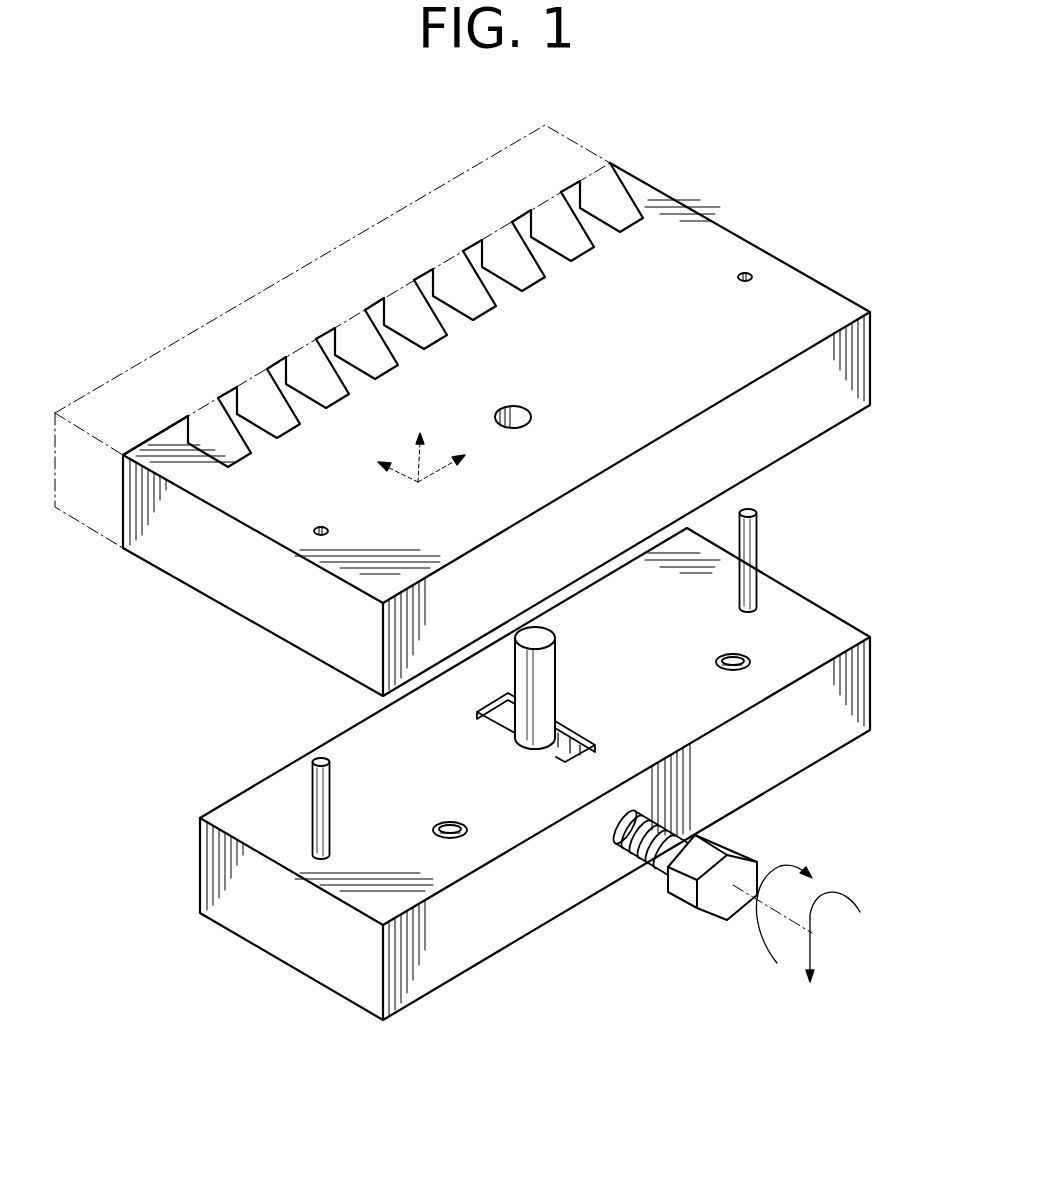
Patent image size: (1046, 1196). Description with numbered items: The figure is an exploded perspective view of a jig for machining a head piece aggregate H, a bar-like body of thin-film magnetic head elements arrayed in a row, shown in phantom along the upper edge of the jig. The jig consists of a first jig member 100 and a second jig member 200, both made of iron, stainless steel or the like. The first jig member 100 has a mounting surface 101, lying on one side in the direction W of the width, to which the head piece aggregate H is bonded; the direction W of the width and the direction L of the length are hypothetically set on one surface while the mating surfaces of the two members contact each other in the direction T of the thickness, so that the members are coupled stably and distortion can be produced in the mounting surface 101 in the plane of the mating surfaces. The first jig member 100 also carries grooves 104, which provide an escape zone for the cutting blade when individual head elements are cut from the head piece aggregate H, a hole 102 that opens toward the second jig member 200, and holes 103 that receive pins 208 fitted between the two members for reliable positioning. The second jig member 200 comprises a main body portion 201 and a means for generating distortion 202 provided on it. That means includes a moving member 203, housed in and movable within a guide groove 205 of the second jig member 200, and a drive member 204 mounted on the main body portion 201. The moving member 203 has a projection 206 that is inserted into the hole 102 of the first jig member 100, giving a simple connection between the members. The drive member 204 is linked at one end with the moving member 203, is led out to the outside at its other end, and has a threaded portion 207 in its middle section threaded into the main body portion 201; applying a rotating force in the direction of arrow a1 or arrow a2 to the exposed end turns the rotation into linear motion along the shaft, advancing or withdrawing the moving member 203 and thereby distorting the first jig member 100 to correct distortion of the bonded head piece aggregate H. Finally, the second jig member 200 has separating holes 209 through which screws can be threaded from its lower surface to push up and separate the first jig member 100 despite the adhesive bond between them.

The first jig member 100 is at (676, 184).
The mounting surface 101 is at (537, 207).
The hole 102 is at (518, 412).
The holes 103 is at (747, 272).
The grooves 104 is at (187, 440).
The second jig member 200 is at (248, 955).
The main body portion 201 is at (223, 872).
The means for generating distortion 202 is at (689, 877).
The moving member 203 is at (557, 732).
The drive member 204 is at (730, 862).
The guide groove 205 is at (585, 740).
The projection 206 is at (547, 655).
The threaded portion 207 is at (627, 853).
The pins 208 is at (316, 780).
The separating holes 209 is at (448, 823).
The head piece aggregate H is at (318, 262).
The direction of thickness T is at (423, 441).
The direction of width W is at (380, 459).
The direction of length L is at (454, 462).
The arrow a1 is at (795, 862).
The arrow a2 is at (842, 890).